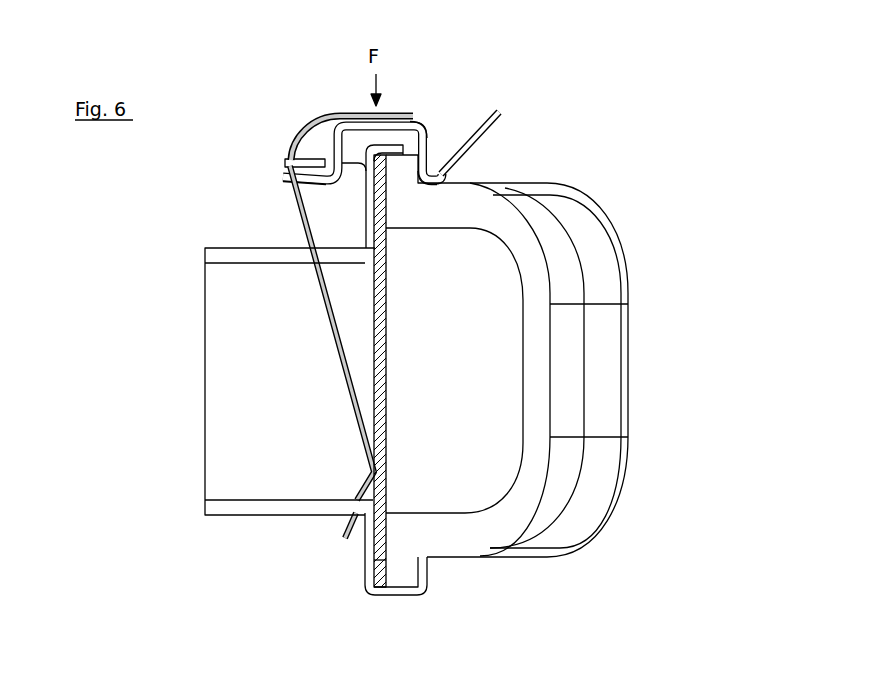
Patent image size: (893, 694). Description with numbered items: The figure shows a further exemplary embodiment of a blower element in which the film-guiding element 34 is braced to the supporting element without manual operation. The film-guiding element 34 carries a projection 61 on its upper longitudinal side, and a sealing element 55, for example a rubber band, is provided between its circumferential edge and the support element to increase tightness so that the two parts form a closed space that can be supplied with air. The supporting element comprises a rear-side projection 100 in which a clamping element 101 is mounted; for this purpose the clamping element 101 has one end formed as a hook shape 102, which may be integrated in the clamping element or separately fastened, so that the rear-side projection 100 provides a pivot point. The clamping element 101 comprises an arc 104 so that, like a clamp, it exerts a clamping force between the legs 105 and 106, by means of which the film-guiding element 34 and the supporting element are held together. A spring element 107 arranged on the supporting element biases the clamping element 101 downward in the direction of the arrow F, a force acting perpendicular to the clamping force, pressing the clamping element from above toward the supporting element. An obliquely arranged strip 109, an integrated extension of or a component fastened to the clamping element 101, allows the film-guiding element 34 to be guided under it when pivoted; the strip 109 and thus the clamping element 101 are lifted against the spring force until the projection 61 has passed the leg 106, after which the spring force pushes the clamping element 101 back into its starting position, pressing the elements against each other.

The film-guiding element 34 is at (607, 398).
The sealing element 55 is at (402, 178).
The projection 61 is at (462, 174).
The rear-side projection 100 is at (307, 128).
The clamping element 101 is at (418, 116).
The hook shape 102 is at (323, 184).
The arc 104 is at (397, 121).
The leg 105 is at (342, 114).
The leg 106 is at (430, 124).
The spring element 107 is at (291, 207).
The strip 109 is at (503, 112).